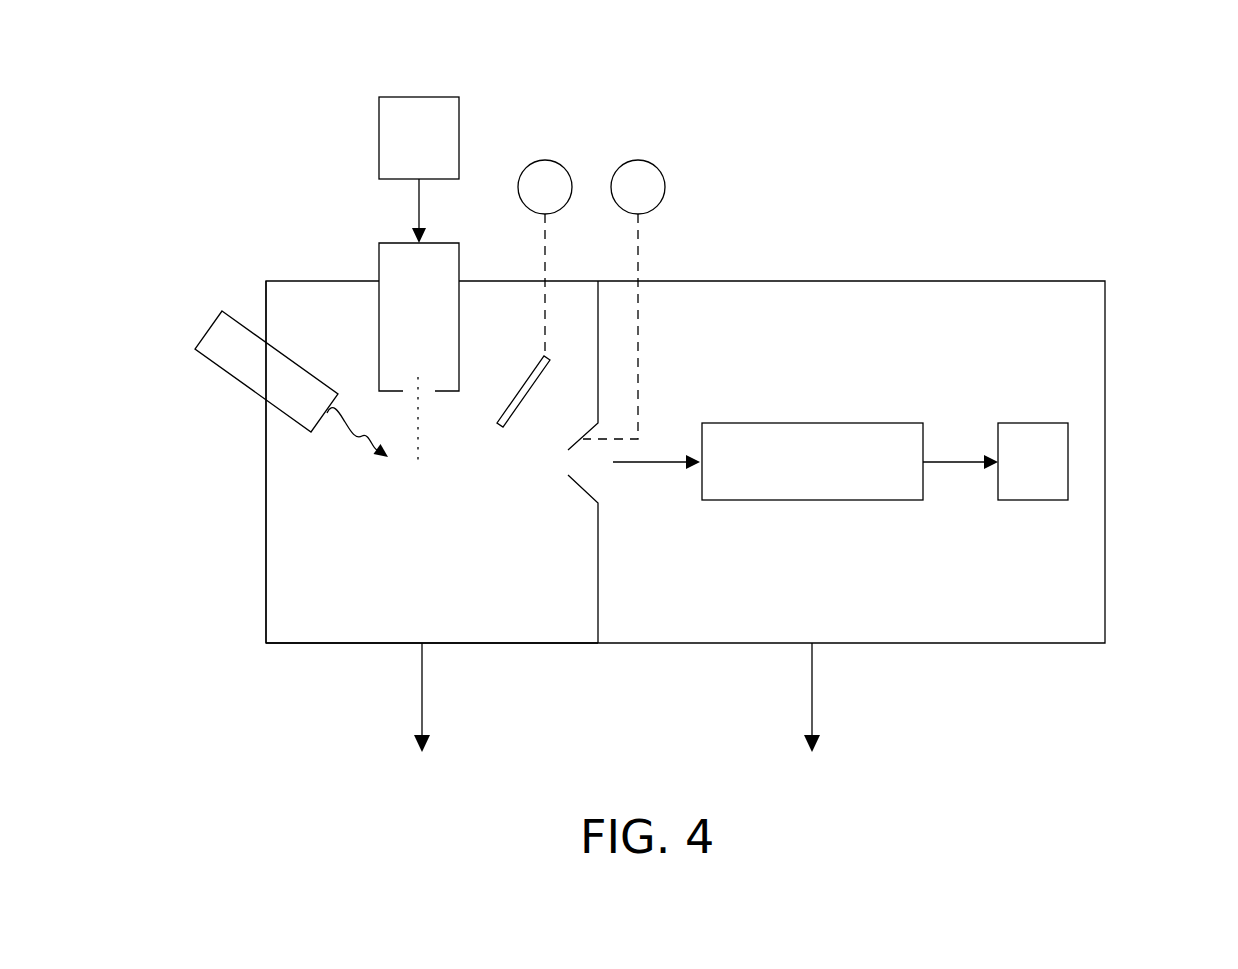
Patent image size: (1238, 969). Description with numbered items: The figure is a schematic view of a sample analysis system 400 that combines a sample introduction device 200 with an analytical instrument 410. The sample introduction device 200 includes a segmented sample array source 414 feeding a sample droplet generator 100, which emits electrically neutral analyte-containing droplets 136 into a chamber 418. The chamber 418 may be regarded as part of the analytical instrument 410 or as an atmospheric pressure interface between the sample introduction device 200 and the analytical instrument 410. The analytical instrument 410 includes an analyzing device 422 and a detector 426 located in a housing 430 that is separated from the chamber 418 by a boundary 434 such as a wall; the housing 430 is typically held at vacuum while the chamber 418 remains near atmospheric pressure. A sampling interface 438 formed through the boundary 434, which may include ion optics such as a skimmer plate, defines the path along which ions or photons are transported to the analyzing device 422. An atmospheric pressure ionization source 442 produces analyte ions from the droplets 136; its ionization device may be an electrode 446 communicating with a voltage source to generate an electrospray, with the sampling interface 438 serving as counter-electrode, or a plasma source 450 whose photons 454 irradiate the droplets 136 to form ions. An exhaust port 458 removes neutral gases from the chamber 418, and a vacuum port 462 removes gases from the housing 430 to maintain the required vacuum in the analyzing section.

The sample analysis system 400 is at (118, 126).
The sample introduction device 200 is at (323, 186).
The segmented sample array source 414 is at (400, 151).
The sample droplet generator 100 is at (400, 332).
The analyte-containing droplets 136 is at (440, 470).
The analytical instrument 410 is at (1010, 236).
The housing 430 is at (1105, 368).
The chamber 418 is at (266, 568).
The atmospheric pressure ionization source 442 is at (192, 497).
The boundary 434 is at (598, 605).
The sampling interface 438 is at (590, 488).
The electrode 446 is at (517, 413).
The plasma source 450 is at (202, 336).
The photons 454 is at (347, 437).
The analyzing device 422 is at (792, 476).
The detector 426 is at (1013, 476).
The exhaust port 458 is at (420, 699).
The vacuum port 462 is at (812, 697).